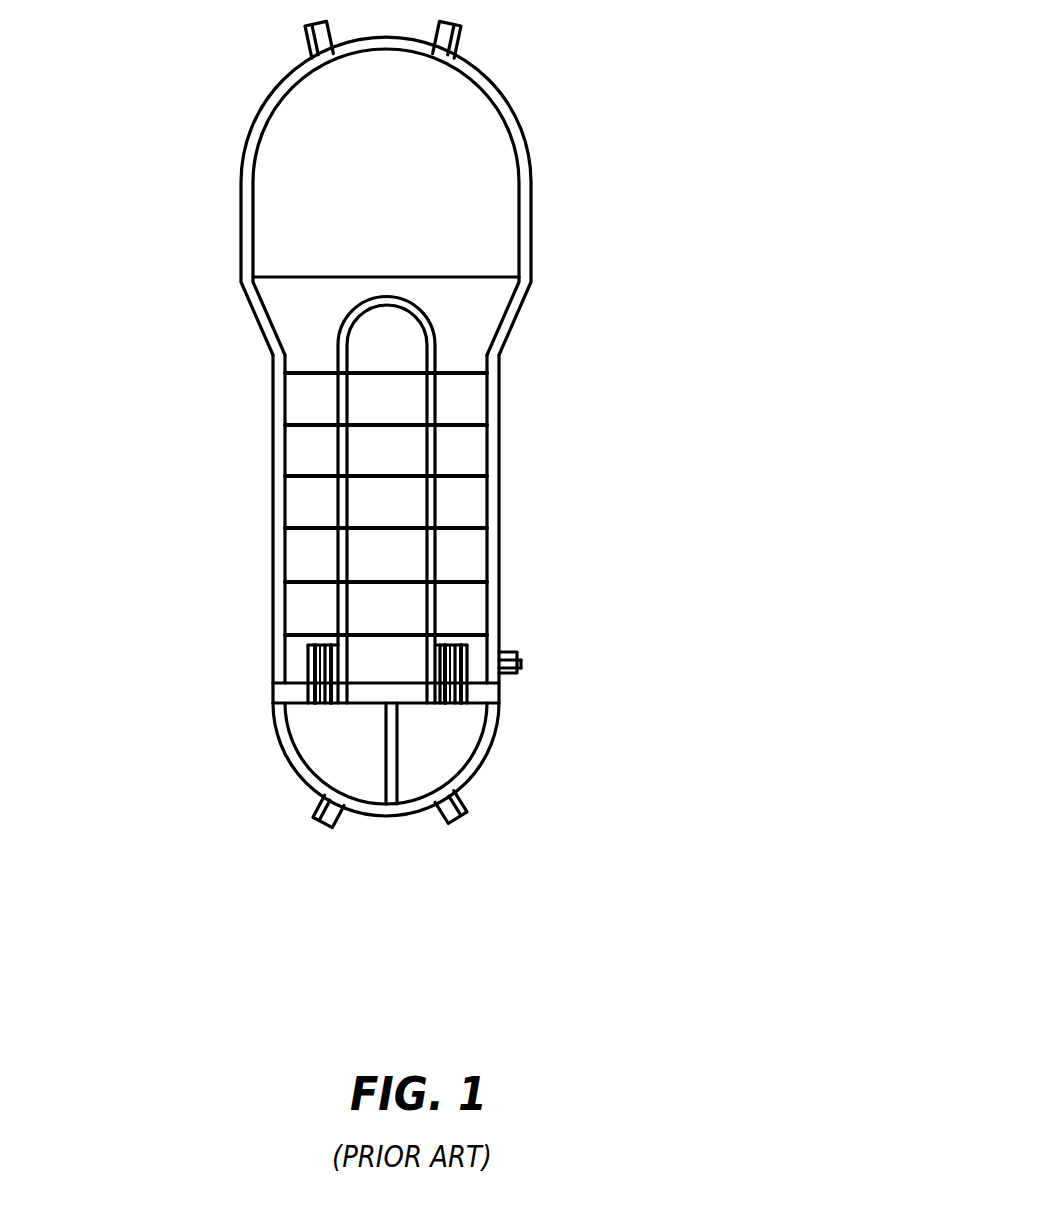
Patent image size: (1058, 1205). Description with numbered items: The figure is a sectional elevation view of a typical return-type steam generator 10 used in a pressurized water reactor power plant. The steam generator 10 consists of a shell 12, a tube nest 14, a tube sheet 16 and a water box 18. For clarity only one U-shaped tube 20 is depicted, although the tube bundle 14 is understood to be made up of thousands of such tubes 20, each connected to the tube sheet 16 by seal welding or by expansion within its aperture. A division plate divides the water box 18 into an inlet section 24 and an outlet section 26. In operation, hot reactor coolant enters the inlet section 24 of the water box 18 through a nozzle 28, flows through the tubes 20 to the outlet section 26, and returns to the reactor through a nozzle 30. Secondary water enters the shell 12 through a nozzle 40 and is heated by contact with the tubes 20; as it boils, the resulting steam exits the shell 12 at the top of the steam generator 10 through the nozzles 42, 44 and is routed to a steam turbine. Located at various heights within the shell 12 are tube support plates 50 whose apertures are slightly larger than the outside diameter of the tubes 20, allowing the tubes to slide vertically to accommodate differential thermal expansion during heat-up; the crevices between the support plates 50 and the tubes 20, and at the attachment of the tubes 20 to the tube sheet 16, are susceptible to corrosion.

The steam generator 10 is at (578, 370).
The shell 12 is at (505, 529).
The tube nest 14 is at (441, 636).
The tube sheet 16 is at (438, 711).
The water box 18 is at (521, 762).
The tube 20 is at (534, 500).
The inlet section 24 is at (454, 760).
The outlet section 26 is at (352, 760).
The nozzle 28 is at (567, 885).
The nozzle 30 is at (195, 855).
The nozzle 40 is at (650, 646).
The nozzle 42 is at (274, 31).
The nozzle 44 is at (599, 35).
The tube support plates 50 is at (275, 505).